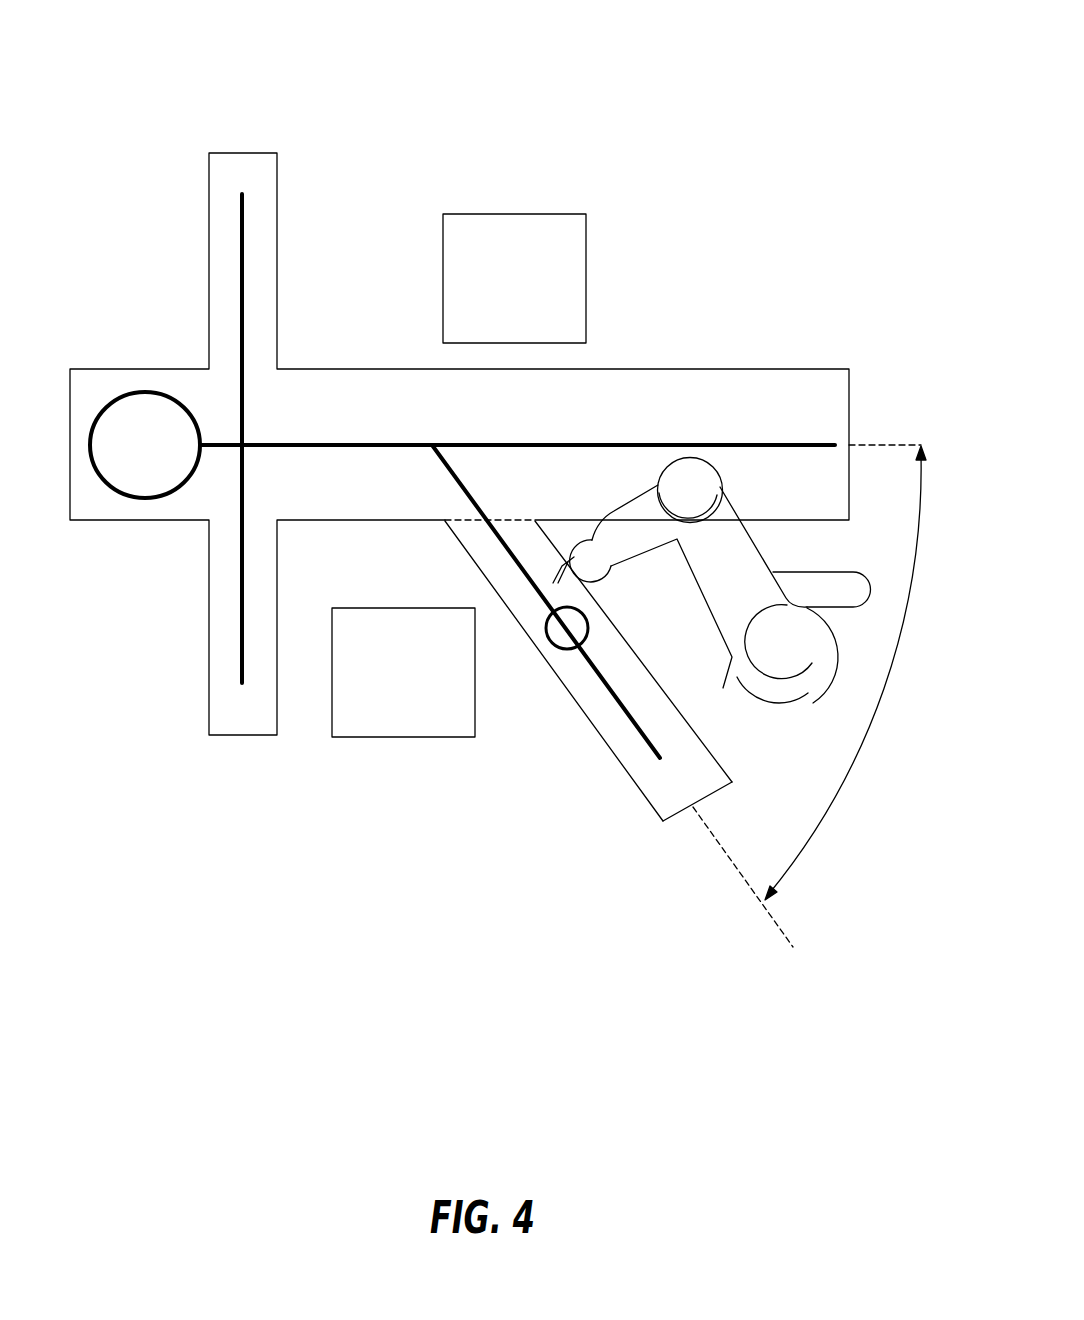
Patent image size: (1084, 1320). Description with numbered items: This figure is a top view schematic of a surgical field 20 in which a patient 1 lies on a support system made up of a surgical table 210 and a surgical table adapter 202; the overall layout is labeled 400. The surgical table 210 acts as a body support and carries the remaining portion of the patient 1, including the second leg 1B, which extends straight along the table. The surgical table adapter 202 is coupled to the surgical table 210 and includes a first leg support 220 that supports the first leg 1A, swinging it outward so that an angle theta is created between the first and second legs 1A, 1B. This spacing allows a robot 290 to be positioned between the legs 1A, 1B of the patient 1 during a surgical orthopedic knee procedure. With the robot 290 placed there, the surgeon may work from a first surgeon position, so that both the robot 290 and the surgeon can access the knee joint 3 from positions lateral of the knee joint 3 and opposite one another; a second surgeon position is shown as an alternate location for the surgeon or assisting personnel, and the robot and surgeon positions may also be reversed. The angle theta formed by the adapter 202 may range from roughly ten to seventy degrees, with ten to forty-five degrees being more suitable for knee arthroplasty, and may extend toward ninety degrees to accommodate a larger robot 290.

The surgical field 20 is at (632, 31).
The operating room layout 400 is at (546, 118).
The patient 1 is at (153, 427).
The first leg 1A is at (622, 703).
The second leg 1B is at (745, 443).
The knee joint 3 is at (568, 630).
The surgical table 210 is at (308, 388).
The first leg support 220 is at (677, 792).
The surgical table adapter 202 is at (715, 780).
The robot 290 is at (777, 543).